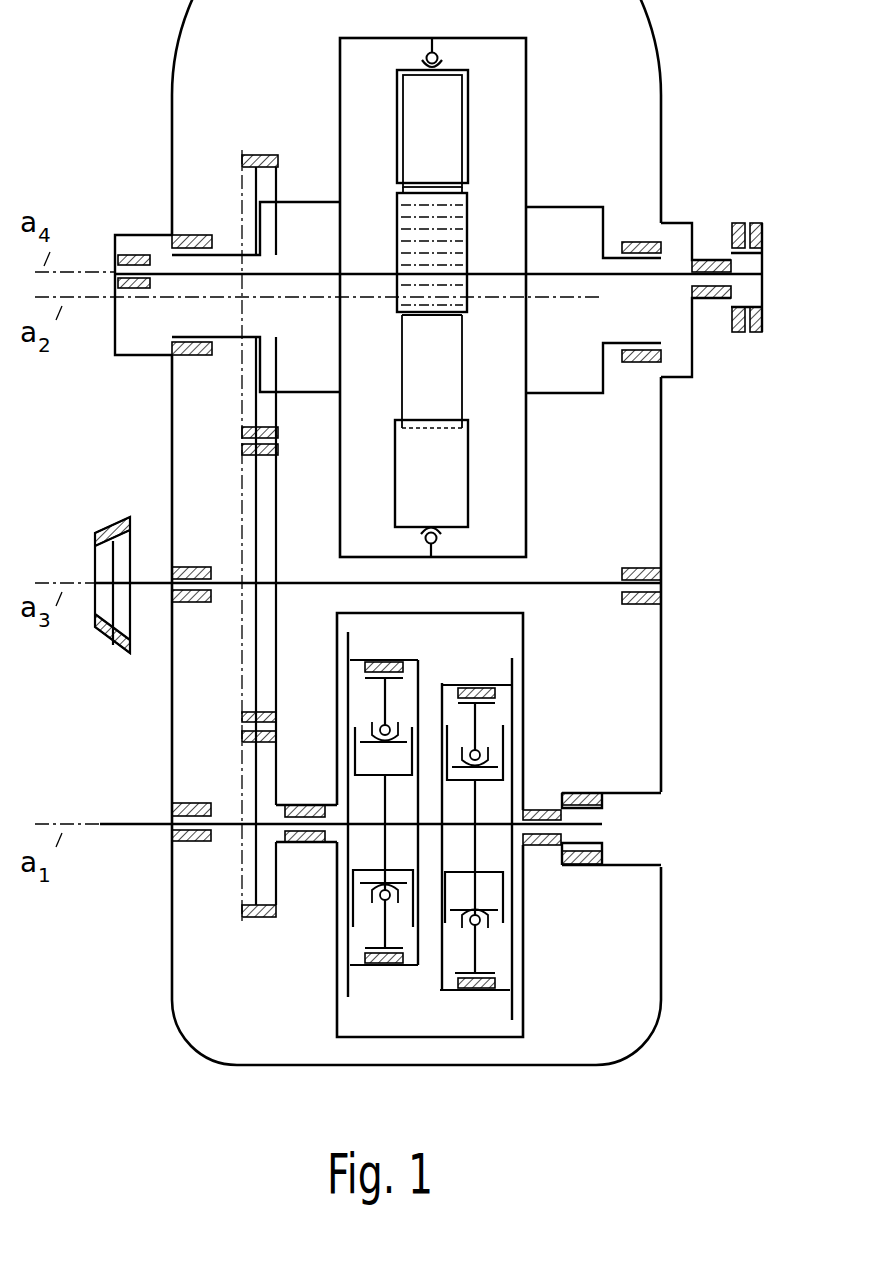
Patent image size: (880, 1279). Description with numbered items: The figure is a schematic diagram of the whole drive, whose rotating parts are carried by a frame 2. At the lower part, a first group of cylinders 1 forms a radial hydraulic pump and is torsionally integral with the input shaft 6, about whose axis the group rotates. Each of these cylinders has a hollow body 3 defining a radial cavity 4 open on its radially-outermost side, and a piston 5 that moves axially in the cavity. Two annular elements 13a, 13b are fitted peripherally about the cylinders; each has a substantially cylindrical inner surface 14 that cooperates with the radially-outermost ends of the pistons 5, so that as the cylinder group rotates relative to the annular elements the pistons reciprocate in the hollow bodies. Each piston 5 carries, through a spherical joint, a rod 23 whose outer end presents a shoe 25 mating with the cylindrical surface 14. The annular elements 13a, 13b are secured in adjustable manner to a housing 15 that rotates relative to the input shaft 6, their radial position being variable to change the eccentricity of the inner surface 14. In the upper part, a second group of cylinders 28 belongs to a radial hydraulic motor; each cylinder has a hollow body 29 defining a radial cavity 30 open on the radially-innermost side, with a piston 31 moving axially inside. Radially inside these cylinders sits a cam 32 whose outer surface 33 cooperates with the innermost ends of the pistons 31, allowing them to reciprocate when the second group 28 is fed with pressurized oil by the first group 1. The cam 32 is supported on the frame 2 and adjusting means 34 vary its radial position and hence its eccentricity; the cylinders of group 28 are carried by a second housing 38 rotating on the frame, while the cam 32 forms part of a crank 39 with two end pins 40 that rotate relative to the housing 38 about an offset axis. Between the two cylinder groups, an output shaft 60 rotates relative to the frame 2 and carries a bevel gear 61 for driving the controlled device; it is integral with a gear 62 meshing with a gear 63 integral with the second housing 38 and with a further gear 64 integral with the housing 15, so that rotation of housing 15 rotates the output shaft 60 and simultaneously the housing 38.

The first group of cylinders 1 is at (506, 795).
The frame 2 is at (661, 628).
The hollow body 3 is at (353, 745).
The radial cavity 4 is at (375, 763).
The piston 5 is at (377, 727).
The input shaft 6 is at (122, 822).
The annular element 13a is at (380, 665).
The annular element 13b is at (474, 688).
The cylindrical inner surface 14 is at (393, 948).
The housing 15 is at (335, 957).
The rod 23 is at (387, 708).
The shoe 25 is at (366, 670).
The second group of cylinders 28 is at (500, 160).
The hollow body 29 is at (468, 130).
The radial cavity 30 is at (427, 138).
The piston 31 is at (467, 158).
The cam 32 is at (415, 250).
The outer surface 33 is at (429, 318).
The adjusting means 34 is at (745, 200).
The second housing 38 is at (333, 112).
The crank 39 is at (472, 262).
The end pins 40 is at (295, 272).
The output shaft 60 is at (302, 580).
The bevel gear 61 is at (118, 527).
The gear 62 is at (252, 455).
The gear 63 is at (248, 167).
The gear 64 is at (246, 745).